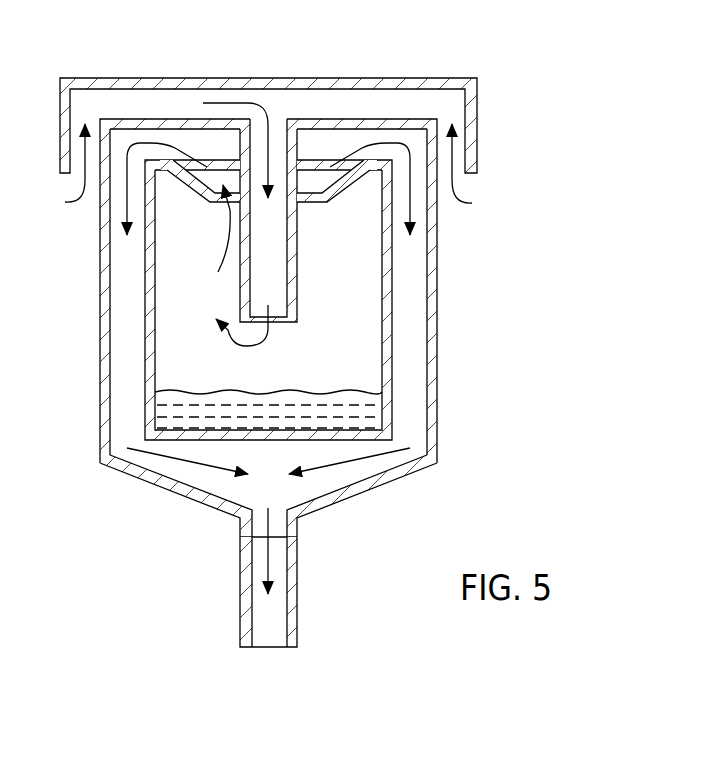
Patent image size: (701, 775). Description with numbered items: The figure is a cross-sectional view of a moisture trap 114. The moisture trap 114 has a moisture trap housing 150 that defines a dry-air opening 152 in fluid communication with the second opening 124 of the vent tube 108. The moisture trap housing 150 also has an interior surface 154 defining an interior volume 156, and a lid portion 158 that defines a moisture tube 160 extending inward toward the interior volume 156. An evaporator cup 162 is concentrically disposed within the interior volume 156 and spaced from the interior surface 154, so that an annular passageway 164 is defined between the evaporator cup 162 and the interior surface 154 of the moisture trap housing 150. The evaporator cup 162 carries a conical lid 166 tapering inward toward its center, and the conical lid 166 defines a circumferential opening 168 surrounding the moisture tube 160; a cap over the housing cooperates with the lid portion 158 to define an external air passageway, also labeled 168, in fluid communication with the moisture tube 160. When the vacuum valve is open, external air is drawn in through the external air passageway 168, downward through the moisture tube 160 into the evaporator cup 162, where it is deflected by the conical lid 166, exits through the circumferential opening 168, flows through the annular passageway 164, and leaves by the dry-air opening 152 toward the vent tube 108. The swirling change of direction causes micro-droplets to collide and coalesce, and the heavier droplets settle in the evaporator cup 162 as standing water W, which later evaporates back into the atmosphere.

The vent tube 108 is at (295, 603).
The moisture trap 114 is at (515, 217).
The second opening 124 is at (277, 542).
The moisture trap housing 150 is at (440, 312).
The dry-air opening 152 is at (190, 498).
The interior surface 154 is at (427, 335).
The interior volume 156 is at (268, 442).
The lid portion 158 is at (368, 118).
The moisture tube 160 is at (243, 303).
The evaporator cup 162 is at (393, 263).
The annular passageway 164 is at (410, 290).
The conical lid 166 is at (190, 189).
The circumferential opening 168 is at (437, 102).
The standing water W is at (183, 390).